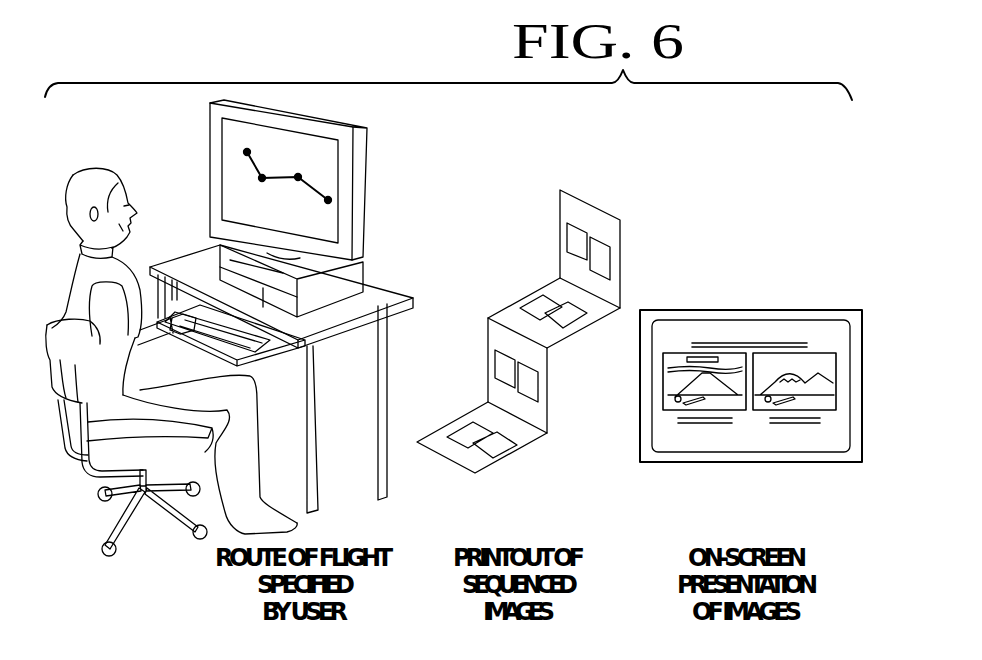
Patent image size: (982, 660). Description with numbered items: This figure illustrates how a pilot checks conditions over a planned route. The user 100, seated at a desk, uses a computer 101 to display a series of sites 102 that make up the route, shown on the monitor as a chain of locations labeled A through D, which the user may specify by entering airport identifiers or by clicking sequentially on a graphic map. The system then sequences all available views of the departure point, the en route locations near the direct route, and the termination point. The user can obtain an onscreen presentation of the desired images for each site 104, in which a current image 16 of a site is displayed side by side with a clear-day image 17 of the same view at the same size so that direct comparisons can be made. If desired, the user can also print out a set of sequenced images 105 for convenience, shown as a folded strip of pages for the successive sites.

The user 100 is at (65, 310).
The computer 101 is at (367, 268).
The series of sites 102 is at (254, 162).
The onscreen presentation of the desired images for each site 104 is at (727, 310).
The set of sequenced images 105 is at (560, 235).
The current image 16 is at (668, 385).
The clear-day image 17 is at (822, 353).